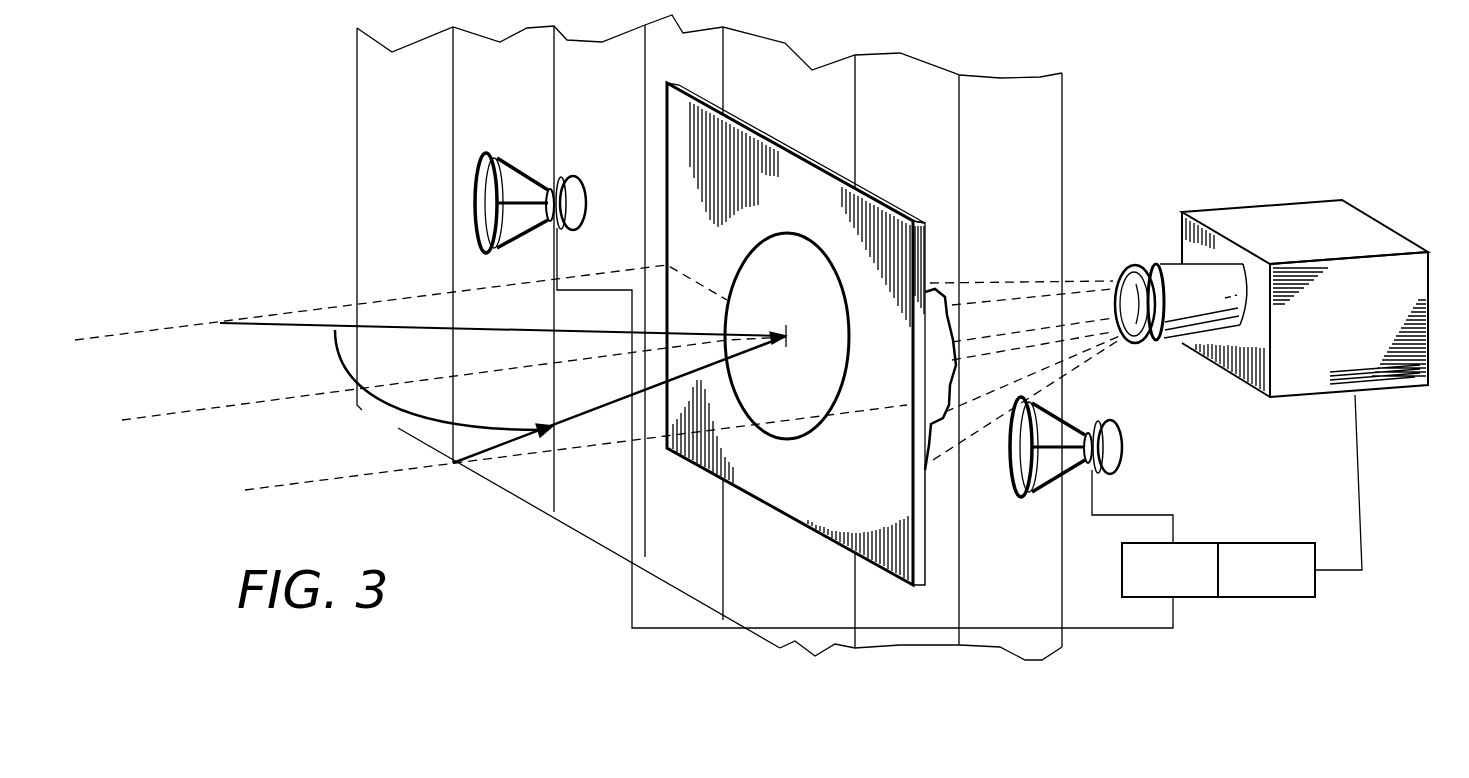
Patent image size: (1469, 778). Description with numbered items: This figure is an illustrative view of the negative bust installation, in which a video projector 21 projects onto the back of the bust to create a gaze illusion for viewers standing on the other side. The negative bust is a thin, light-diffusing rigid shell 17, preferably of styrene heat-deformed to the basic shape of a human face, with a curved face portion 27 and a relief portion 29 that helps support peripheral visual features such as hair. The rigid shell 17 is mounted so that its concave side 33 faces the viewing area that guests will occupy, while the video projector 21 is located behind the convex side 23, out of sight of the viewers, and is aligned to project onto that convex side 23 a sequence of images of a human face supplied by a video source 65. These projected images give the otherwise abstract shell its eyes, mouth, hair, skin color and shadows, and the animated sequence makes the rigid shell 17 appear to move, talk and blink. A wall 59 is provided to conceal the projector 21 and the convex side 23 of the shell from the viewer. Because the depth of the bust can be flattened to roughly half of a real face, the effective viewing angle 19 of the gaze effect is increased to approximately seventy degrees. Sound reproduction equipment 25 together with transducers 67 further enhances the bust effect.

The rigid shell 17 is at (938, 289).
The effective viewing angle 19 is at (392, 428).
The video projector 21 is at (1300, 222).
The convex side 23 is at (950, 461).
The sound reproduction equipment 25 is at (1190, 562).
The curved face portion 27 is at (940, 300).
The relief portion 29 is at (805, 500).
The concave side 33 is at (808, 390).
The wall 59 is at (1012, 108).
The video source 65 is at (1272, 583).
The transducers 67 is at (562, 180).